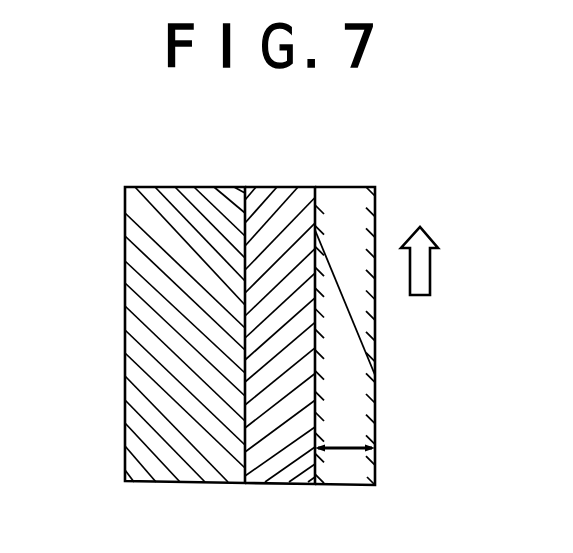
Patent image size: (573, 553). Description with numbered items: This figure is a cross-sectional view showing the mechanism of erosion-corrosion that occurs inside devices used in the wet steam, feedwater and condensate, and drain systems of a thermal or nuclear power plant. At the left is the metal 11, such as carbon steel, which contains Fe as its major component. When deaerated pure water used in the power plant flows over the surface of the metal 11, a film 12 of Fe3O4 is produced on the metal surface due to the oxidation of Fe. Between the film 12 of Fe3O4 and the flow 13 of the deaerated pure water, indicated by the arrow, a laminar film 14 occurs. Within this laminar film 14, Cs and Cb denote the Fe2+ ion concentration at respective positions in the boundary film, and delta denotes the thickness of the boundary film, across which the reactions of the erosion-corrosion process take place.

The metal 11 is at (133, 263).
The film of Fe3O4 12 is at (277, 453).
The flow of deaerated pure water 13 is at (430, 278).
The laminar film 14 is at (352, 187).